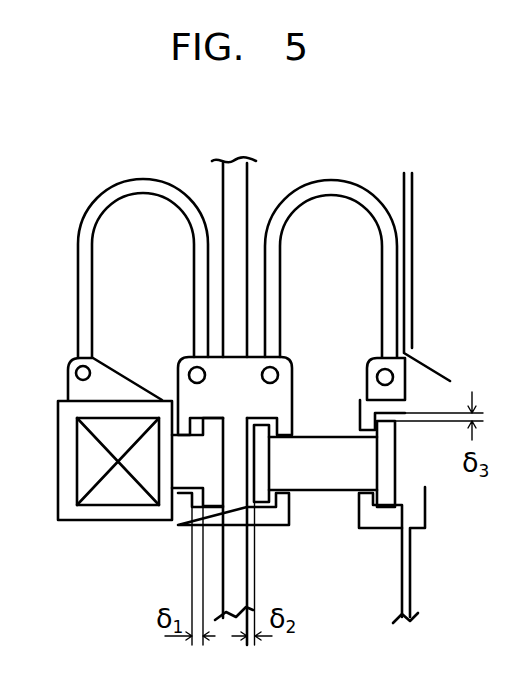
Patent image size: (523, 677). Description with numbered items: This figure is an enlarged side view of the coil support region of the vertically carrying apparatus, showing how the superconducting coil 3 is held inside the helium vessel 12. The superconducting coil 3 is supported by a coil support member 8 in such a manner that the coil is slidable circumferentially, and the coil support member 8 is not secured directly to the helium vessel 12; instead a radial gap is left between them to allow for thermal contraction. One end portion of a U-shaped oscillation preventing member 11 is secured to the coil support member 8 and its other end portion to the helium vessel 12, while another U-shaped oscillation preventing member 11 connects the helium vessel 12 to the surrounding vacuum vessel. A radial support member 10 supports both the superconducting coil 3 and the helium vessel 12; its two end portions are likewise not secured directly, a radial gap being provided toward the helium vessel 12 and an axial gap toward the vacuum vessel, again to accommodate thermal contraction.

The superconducting coil 3 is at (113, 490).
The coil support member 8 is at (137, 522).
The radial support member 10 is at (328, 490).
The U-shaped oscillation preventing members 11 is at (162, 179).
The helium vessel 12 is at (250, 190).